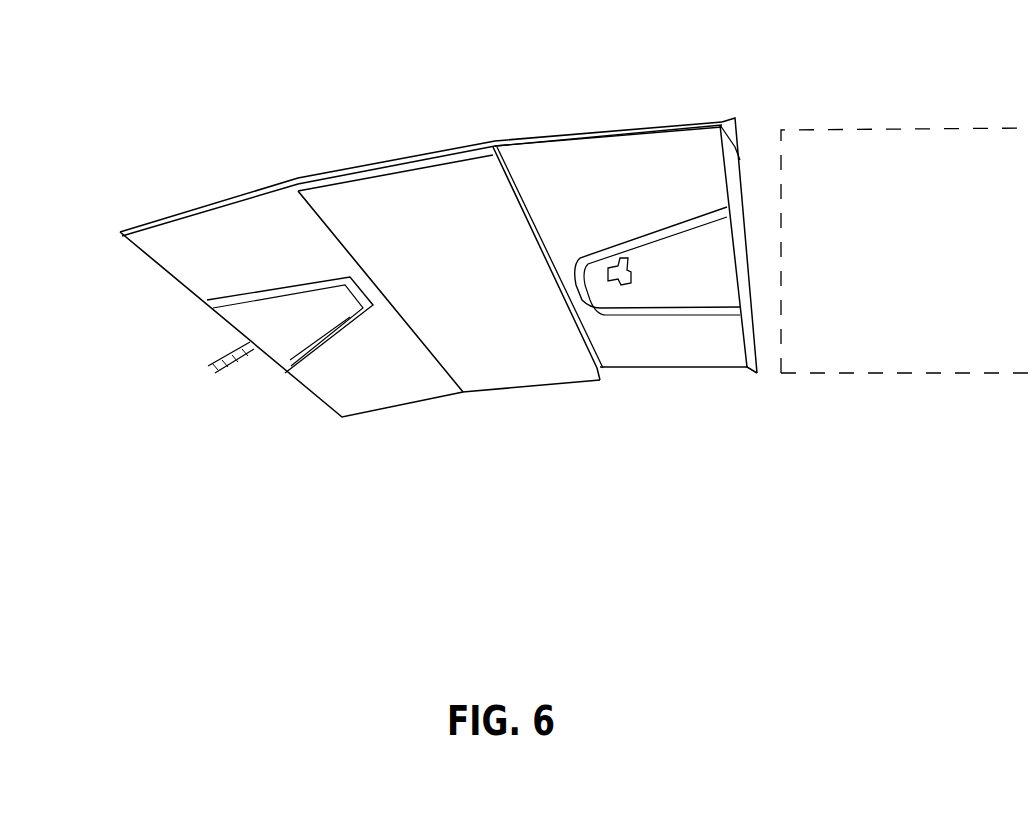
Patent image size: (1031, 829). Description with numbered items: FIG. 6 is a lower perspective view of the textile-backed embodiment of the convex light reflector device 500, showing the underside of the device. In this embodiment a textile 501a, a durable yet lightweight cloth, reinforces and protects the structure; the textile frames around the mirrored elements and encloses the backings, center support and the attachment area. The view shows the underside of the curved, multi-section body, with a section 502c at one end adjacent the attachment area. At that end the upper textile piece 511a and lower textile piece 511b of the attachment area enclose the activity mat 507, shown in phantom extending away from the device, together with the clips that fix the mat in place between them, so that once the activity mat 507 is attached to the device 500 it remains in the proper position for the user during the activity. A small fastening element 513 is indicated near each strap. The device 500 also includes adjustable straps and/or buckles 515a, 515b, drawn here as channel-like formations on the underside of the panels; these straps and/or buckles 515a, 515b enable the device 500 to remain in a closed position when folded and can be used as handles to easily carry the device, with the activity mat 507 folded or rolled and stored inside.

The convex light reflector device 500 is at (562, 277).
The textile 501a is at (378, 387).
The end panel section 502c is at (632, 145).
The activity mat 507 is at (982, 345).
The upper textile piece 511a is at (733, 123).
The lower textile piece 511b is at (735, 147).
The clip 513 is at (208, 365).
The adjustable strap and/or buckle 515a is at (293, 362).
The adjustable strap and/or buckle 515b is at (688, 308).